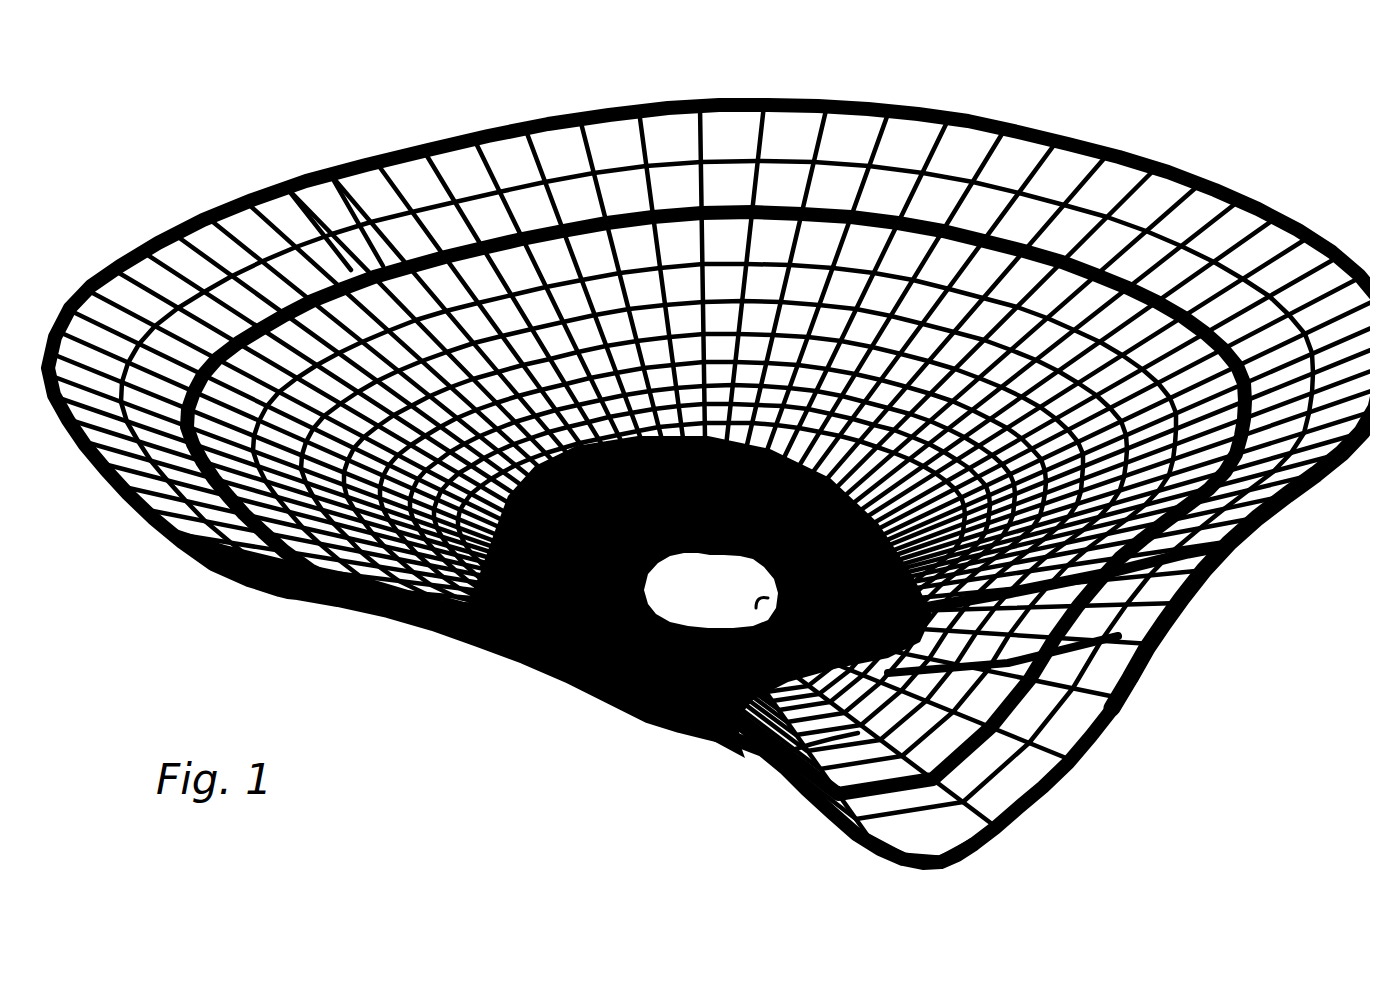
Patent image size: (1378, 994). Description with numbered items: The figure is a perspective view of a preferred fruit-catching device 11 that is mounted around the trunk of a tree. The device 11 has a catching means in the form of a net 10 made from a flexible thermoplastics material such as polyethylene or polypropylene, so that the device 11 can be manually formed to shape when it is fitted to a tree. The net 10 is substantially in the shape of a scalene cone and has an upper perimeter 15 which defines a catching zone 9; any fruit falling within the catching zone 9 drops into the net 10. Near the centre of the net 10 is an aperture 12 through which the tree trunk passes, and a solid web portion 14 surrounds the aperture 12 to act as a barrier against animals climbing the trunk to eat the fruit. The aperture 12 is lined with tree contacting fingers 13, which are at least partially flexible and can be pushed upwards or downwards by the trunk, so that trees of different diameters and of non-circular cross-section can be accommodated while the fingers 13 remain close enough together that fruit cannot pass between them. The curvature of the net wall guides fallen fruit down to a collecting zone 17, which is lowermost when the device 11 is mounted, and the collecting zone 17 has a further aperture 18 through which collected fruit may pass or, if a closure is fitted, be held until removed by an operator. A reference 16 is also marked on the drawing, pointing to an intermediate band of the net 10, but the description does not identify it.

The catching zone 9 is at (351, 228).
The net 10 is at (1202, 200).
The device 11 is at (562, 752).
The aperture 12 is at (688, 609).
The tree contacting fingers 13 is at (742, 600).
The solid web portion 14 is at (446, 636).
The upper perimeter 15 is at (415, 140).
The intermediate reinforcing band 16 is at (622, 190).
The collecting zone 17 is at (871, 822).
The aperture 18 is at (828, 783).